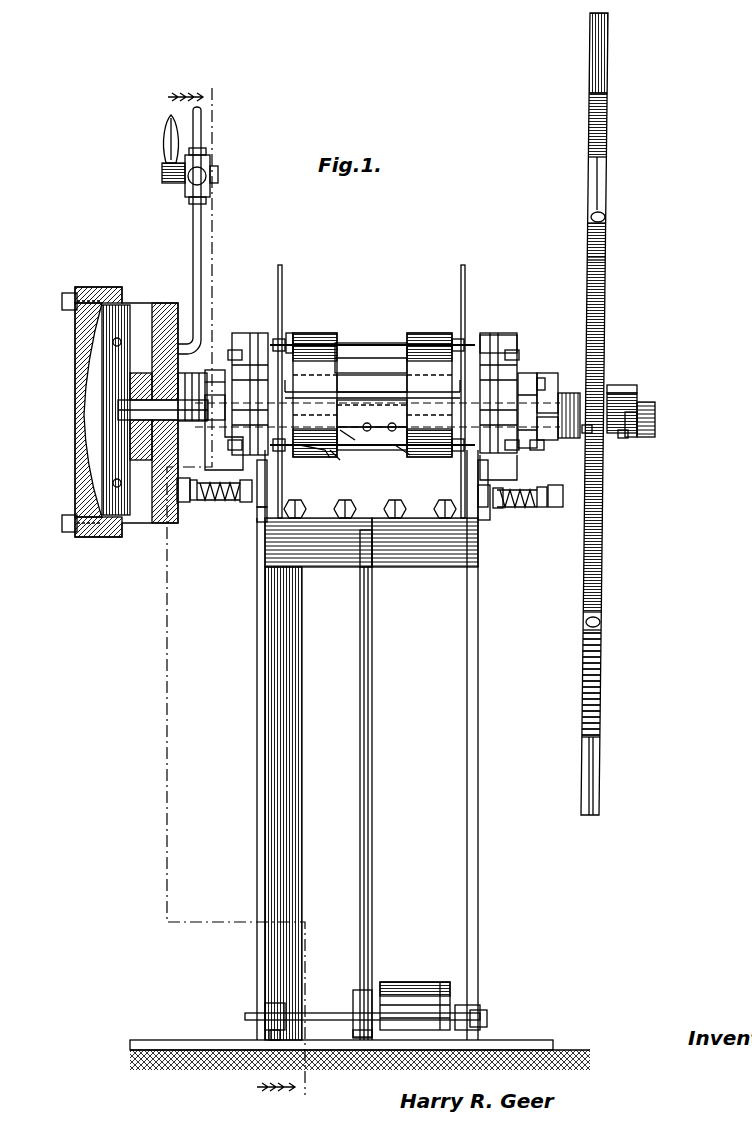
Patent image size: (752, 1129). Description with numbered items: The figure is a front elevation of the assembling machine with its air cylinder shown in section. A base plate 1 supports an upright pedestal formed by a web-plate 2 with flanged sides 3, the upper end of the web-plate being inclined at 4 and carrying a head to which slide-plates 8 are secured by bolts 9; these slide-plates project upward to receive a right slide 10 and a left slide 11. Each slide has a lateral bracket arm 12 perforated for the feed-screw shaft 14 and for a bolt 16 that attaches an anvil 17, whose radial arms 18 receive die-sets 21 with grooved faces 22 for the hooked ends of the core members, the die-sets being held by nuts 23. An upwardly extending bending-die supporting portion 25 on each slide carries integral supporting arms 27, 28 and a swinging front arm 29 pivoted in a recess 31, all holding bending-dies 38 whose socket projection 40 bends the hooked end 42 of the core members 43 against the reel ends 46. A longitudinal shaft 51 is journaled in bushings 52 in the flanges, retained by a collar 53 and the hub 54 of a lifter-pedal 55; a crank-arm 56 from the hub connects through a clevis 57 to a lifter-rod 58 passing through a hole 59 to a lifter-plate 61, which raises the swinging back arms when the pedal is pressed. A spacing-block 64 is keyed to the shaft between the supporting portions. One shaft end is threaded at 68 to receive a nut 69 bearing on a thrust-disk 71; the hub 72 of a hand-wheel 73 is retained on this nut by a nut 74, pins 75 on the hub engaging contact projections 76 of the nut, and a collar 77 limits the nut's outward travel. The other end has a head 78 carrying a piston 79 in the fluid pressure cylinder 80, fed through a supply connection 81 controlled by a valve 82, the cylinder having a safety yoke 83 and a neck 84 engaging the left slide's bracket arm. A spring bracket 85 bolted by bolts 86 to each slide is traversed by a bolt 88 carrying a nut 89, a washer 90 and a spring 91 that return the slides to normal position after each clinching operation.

The base plate 1 is at (200, 1040).
The web-plate 2 is at (232, 818).
The flanged sides 3 is at (257, 755).
The inclined upper end 4 is at (345, 530).
The slide-plates 8 is at (440, 530).
The bolts 9 is at (338, 512).
The right slide 10 is at (487, 490).
The left slide 11 is at (212, 462).
The bracket arm 12 is at (222, 370).
The feed-screw shaft 14 is at (140, 408).
The bolt 16 is at (190, 372).
The anvils 17 is at (505, 333).
The radial arms 18 is at (373, 400).
The die-sets 21 is at (248, 335).
The grooves 22 is at (490, 335).
The nuts 23 is at (527, 375).
The bending-die supporting portion 25 is at (305, 335).
The supporting arm 27 is at (330, 335).
The supporting arm 28 is at (332, 452).
The swinging front arm 29 is at (348, 432).
The recess 31 is at (372, 374).
The bending-dies 38 is at (400, 447).
The socket projection 40 is at (292, 335).
The hooked end 42 is at (325, 452).
The core members 43 is at (398, 344).
The reel ends 46 is at (282, 265).
The longitudinal shaft 51 is at (488, 1017).
The bushings 52 is at (262, 1008).
The collar 53 is at (277, 1033).
The hub 54 is at (425, 1027).
The lifter-pedal 55 is at (405, 982).
The crank-arm 56 is at (370, 1037).
The clevis 57 is at (358, 995).
The lifter-rod 58 is at (368, 880).
The hole 59 is at (362, 545).
The lifter-plate 61 is at (372, 435).
The spacing-block 64 is at (378, 388).
The threaded end portion 68 is at (640, 405).
The nut 69 is at (592, 430).
The thrust-disk 71 is at (540, 450).
The hub 72 is at (632, 432).
The hand-wheel 73 is at (607, 160).
The nut 74 is at (625, 436).
The pins 75 is at (575, 393).
The contact projections 76 is at (612, 400).
The collar 77 is at (655, 420).
The head 78 is at (125, 412).
The piston 79 is at (130, 440).
The fluid pressure cylinder 80 is at (125, 300).
The fluid supply connection 81 is at (193, 235).
The valve 82 is at (212, 170).
The safety yoke 83 is at (80, 345).
The neck 84 is at (100, 375).
The spring bracket 85 is at (260, 500).
The bolts 86 is at (262, 525).
The bolt 88 is at (180, 492).
The nut 89 is at (192, 498).
The washer 90 is at (205, 500).
The spring 91 is at (245, 500).